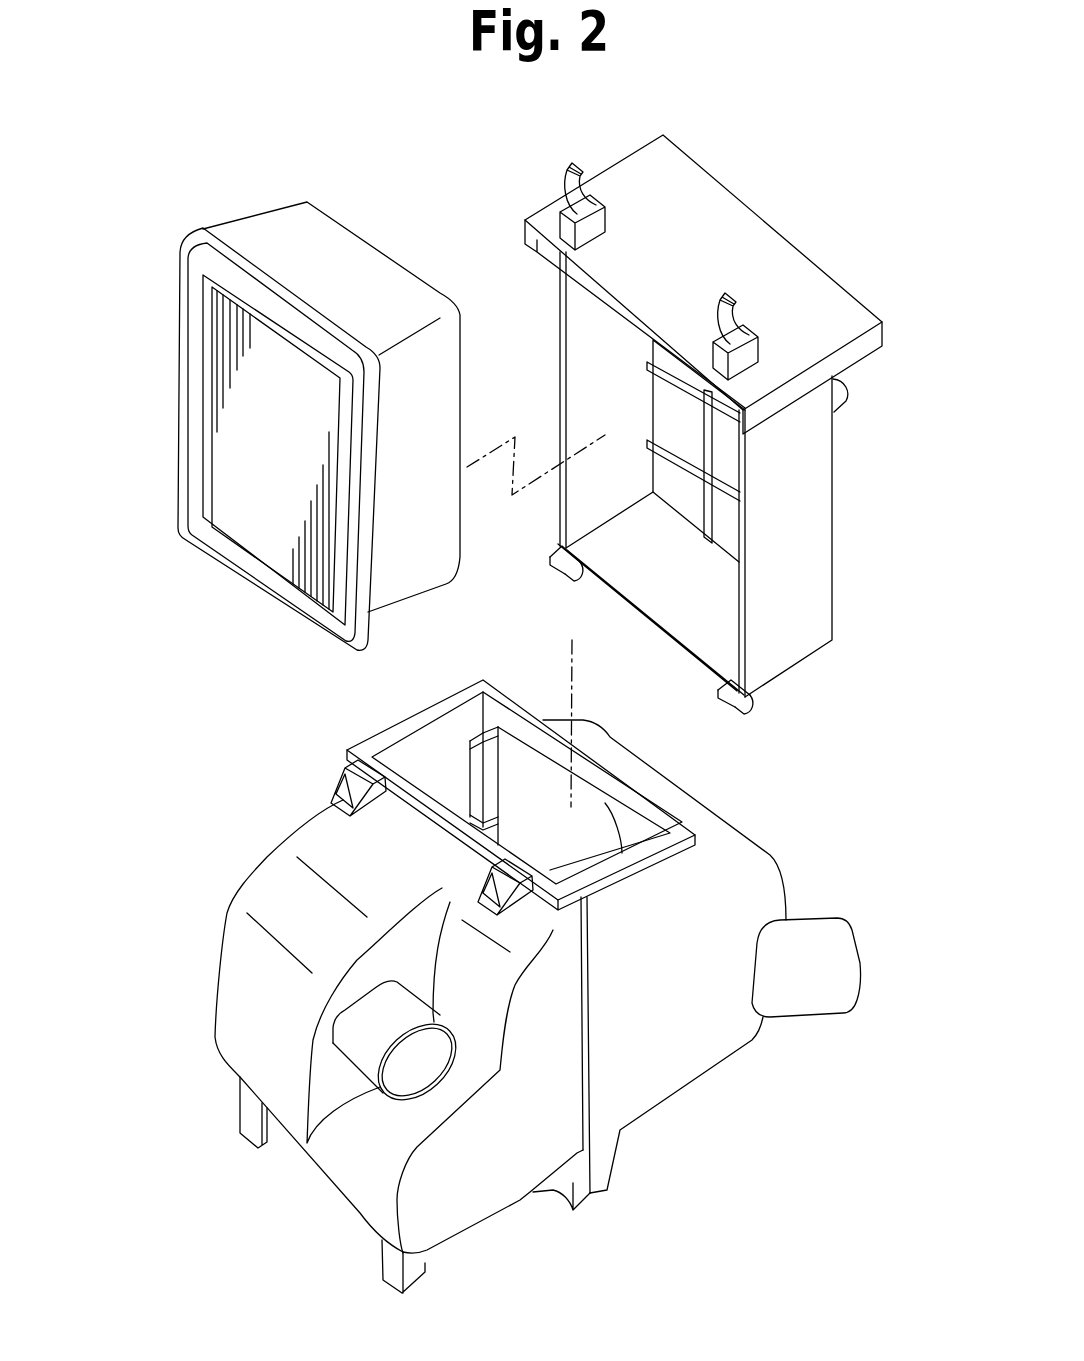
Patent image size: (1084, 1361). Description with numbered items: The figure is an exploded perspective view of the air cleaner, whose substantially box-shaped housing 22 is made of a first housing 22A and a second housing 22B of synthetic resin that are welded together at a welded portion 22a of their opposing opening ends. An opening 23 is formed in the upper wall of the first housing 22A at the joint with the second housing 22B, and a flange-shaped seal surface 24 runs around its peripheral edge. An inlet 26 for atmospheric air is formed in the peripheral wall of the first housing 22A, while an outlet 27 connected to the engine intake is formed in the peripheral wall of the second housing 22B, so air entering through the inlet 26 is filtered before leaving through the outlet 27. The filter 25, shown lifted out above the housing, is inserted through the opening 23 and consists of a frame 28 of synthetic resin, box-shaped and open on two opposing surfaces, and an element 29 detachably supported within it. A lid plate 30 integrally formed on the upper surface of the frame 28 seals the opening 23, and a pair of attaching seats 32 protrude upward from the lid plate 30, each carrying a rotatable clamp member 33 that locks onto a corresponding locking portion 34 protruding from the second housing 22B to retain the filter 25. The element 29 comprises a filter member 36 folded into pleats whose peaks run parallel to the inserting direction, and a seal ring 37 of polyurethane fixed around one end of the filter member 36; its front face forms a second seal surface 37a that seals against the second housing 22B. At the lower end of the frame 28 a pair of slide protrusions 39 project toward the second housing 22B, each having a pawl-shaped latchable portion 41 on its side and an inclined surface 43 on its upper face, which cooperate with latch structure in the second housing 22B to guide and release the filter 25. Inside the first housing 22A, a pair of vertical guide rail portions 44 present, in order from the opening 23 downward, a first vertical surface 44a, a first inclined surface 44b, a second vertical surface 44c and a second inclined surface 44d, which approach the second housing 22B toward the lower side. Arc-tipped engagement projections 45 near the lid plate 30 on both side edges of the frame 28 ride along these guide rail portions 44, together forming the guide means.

The housing 22 is at (524, 966).
The first housing 22A is at (778, 882).
The second housing 22B is at (262, 861).
The welded portion 22a is at (590, 950).
The opening 23 is at (521, 776).
The seal surface 24 is at (456, 700).
The filter 25 is at (701, 443).
The inlet 26 is at (806, 1013).
The outlet 27 is at (413, 1086).
The frame 28 is at (701, 507).
The element 29 is at (281, 401).
The lid plate 30 is at (703, 278).
The attaching seat 32 is at (606, 226).
The clamp member 33 is at (599, 191).
The locking portion 34 is at (377, 817).
The filter member 36 is at (266, 203).
The seal ring 37 is at (241, 439).
The second seal surface 37a is at (178, 373).
The slide protrusion 39 is at (646, 650).
The latchable portion 41 is at (577, 583).
The inclined surface 43 is at (551, 559).
The guide rail portion 44 is at (481, 744).
The first vertical surface 44a is at (496, 714).
The first inclined surface 44b is at (470, 741).
The second vertical surface 44c is at (491, 805).
The second inclined surface 44d is at (491, 828).
The engagement projection 45 is at (850, 386).